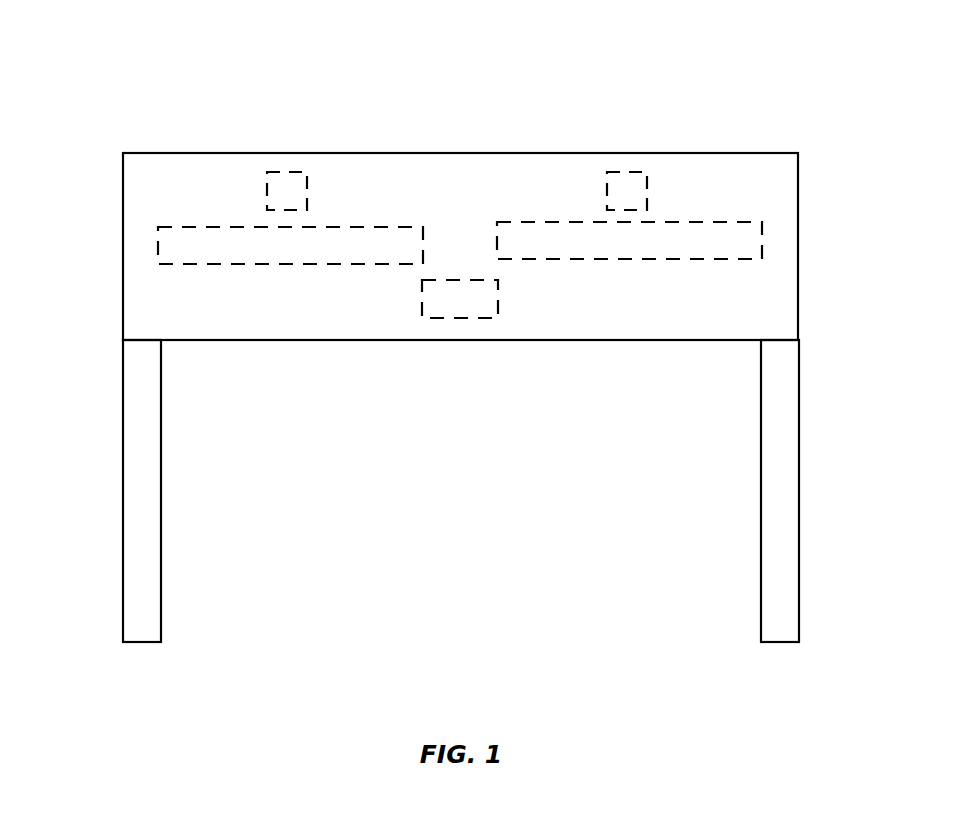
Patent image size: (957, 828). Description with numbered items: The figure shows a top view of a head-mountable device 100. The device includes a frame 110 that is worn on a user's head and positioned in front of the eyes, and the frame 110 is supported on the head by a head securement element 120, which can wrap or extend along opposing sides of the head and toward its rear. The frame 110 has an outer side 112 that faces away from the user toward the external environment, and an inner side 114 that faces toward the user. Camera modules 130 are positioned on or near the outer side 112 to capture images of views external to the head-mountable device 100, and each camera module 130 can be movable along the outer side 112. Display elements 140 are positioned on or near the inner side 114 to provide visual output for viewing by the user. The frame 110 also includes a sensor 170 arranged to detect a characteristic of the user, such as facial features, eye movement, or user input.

The head-mountable device 100 is at (372, 73).
The frame 110 is at (170, 153).
The outer side 112 is at (457, 153).
The inner side 114 is at (470, 340).
The head securement element 120 is at (123, 427).
The camera modules 130 is at (283, 172).
The display elements 140 is at (213, 227).
The sensor 170 is at (452, 278).